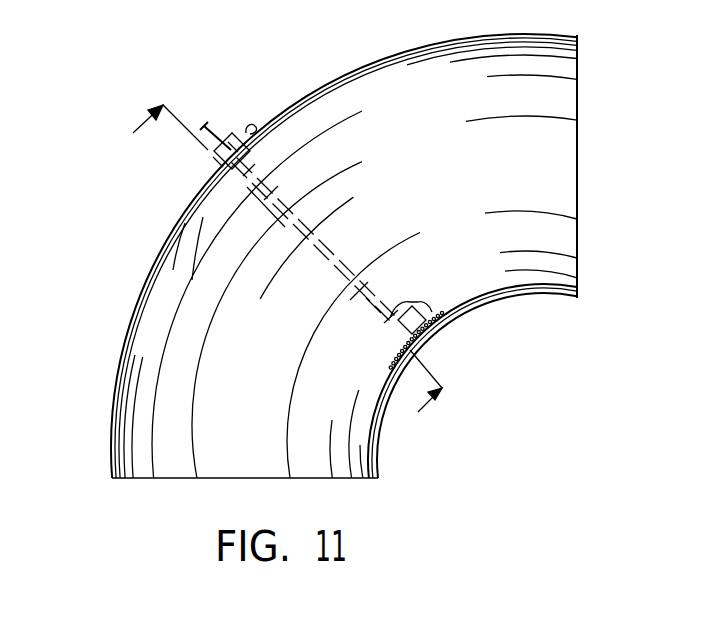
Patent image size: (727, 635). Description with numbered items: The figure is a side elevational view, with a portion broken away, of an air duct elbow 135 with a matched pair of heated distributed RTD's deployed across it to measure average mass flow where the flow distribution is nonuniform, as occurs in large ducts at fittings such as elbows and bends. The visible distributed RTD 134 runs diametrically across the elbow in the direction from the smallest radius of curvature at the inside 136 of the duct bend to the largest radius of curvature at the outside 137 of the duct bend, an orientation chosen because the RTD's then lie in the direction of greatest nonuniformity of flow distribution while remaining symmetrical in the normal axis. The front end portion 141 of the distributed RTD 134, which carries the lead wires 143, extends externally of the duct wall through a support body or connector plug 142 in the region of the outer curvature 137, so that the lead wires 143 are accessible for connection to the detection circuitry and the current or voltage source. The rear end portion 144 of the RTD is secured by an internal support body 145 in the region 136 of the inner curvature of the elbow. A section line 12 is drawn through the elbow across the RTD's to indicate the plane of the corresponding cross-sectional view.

The section line 12 is at (276, 277).
The distributed RTD 134 is at (312, 220).
The air duct elbow 135 is at (312, 91).
The inside of the duct bend 136 is at (432, 326).
The outside of the duct bend 137 is at (266, 135).
The front end portion 141 is at (214, 151).
The connector plug 142 is at (246, 130).
The lead wires 143 is at (222, 127).
The rear end portion 144 is at (410, 302).
The internal support body 145 is at (403, 343).